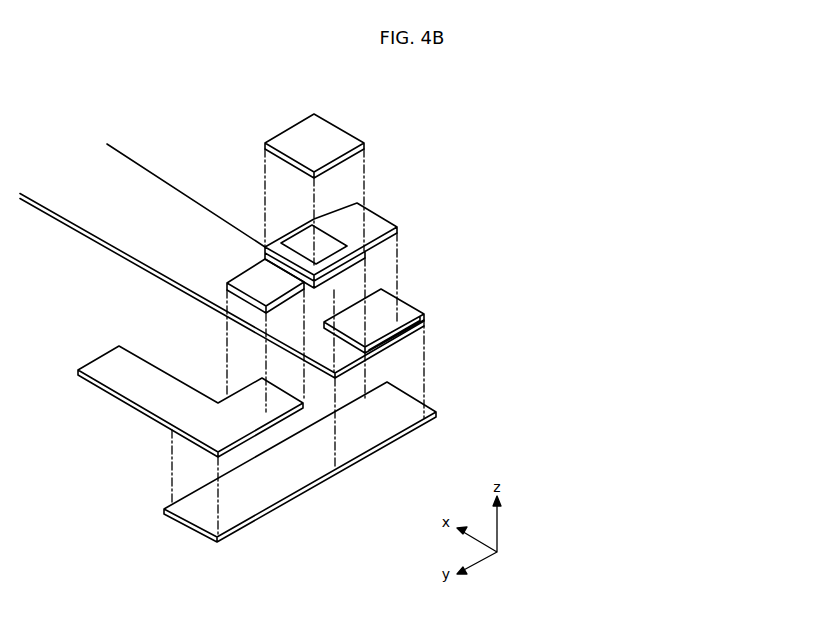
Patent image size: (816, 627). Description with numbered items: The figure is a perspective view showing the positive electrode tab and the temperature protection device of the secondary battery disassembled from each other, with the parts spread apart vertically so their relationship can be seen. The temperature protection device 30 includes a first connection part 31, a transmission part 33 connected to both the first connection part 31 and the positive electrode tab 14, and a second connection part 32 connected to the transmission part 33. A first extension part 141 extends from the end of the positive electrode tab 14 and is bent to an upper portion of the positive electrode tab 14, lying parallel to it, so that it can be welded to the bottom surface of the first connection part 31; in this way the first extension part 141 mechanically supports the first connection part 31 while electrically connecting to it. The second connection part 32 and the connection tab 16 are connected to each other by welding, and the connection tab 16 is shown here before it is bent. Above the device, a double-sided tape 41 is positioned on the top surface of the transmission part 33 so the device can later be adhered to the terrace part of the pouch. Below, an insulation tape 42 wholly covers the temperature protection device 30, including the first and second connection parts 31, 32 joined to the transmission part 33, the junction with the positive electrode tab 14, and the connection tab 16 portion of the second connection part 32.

The positive electrode tab 14 is at (122, 240).
The first extension part 141 is at (402, 304).
The connection tab 16 is at (142, 395).
The temperature protection device 30 is at (363, 272).
The first connection part 31 is at (380, 222).
The second connection part 32 is at (285, 292).
The transmission part 33 is at (327, 238).
The double-sided tape 41 is at (333, 133).
The insulation tape 42 is at (283, 485).